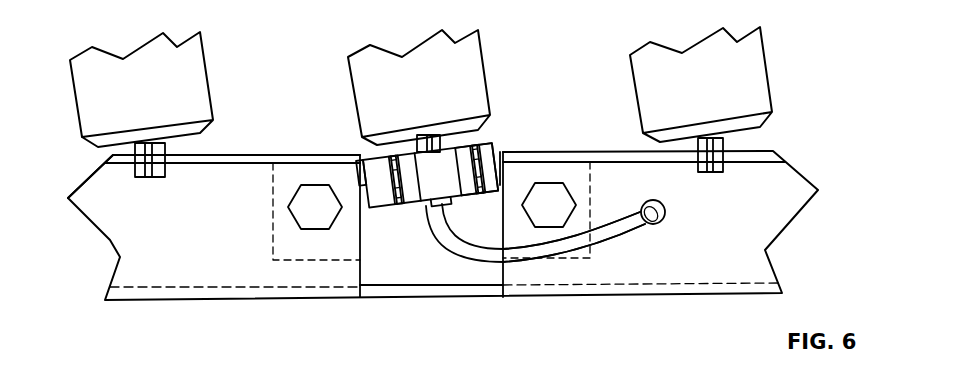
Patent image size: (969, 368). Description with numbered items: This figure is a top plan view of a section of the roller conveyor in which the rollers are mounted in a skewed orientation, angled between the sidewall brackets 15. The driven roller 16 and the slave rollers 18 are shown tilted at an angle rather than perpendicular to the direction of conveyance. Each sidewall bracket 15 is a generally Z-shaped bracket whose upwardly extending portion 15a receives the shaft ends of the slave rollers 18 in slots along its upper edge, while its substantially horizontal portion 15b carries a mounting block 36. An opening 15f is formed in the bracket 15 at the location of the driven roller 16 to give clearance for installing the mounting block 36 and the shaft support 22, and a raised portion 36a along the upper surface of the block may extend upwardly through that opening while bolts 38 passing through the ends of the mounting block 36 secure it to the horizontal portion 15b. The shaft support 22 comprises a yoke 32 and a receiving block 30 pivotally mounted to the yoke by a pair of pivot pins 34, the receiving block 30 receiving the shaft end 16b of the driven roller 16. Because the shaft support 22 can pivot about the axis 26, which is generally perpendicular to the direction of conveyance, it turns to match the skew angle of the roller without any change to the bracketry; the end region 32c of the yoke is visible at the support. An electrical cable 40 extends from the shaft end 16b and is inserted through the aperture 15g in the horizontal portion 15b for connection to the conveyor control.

The sidewall bracket 15 is at (128, 228).
The upwardly extending portion 15a is at (218, 172).
The horizontal portion 15b is at (97, 183).
The opening 15f is at (508, 279).
The aperture 15g is at (667, 208).
The driven roller 16 is at (422, 53).
The shaft end 16b is at (423, 206).
The slave roller 18 is at (190, 67).
The shaft support 22 is at (505, 116).
The axis 26 is at (435, 163).
The receiving block 30 is at (465, 187).
The yoke 32 is at (373, 211).
The holder right end 32c is at (497, 147).
The pivot pins 34 is at (360, 173).
The mounting block 36 is at (371, 262).
The raised portion 36a is at (417, 252).
The bolt 38 is at (293, 202).
The electrical cable 40 is at (617, 237).